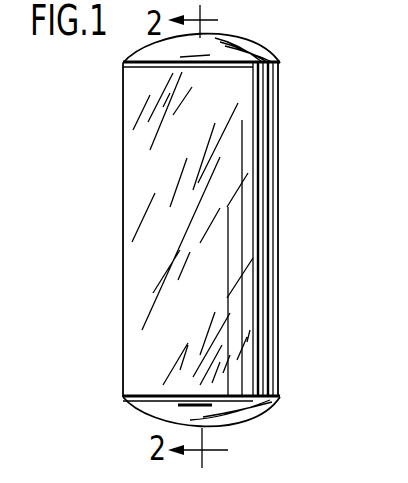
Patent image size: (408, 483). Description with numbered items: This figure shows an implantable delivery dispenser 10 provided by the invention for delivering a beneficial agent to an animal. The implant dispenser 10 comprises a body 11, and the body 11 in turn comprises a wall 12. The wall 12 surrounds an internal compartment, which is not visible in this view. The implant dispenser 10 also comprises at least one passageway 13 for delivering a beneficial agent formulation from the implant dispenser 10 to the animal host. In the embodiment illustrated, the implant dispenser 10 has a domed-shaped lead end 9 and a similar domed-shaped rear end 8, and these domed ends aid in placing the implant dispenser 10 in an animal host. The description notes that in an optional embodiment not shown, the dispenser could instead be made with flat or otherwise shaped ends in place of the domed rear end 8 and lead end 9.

The rear end 8 is at (237, 418).
The lead end 9 is at (258, 52).
The implantable delivery dispenser 10 is at (322, 152).
The body 11 is at (278, 205).
The wall 12 is at (278, 238).
The passageway 13 is at (205, 35).